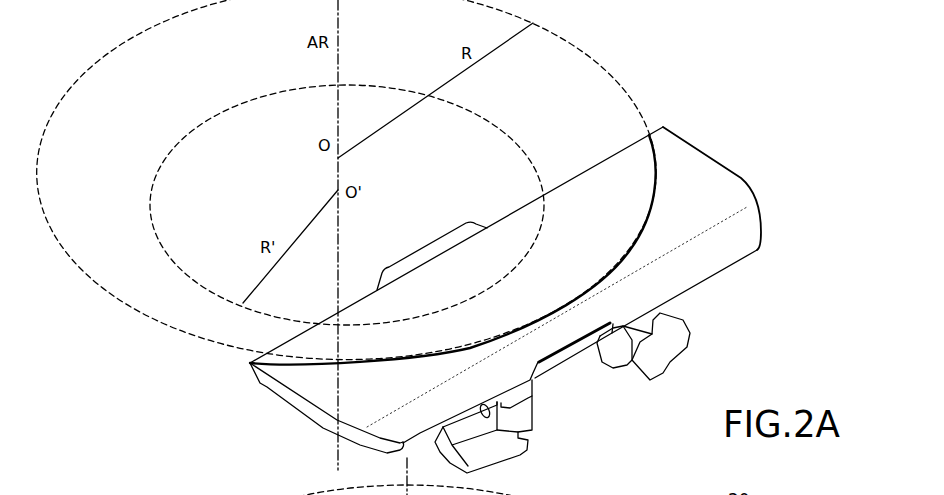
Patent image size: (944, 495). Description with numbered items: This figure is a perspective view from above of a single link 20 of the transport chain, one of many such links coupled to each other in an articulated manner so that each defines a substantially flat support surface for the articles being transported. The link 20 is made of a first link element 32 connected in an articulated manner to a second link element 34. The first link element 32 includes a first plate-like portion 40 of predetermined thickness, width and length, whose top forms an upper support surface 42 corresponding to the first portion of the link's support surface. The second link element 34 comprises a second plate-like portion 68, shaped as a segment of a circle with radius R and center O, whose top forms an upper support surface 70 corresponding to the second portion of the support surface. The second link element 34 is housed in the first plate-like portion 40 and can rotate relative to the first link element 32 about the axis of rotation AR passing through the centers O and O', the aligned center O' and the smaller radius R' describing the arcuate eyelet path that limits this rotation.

The link 20 is at (683, 80).
The first link element 32 is at (737, 147).
The second link element 34 is at (597, 137).
The first plate-like portion 40 is at (782, 255).
The upper support surface 42 is at (720, 192).
The second plate-like portion 68 is at (513, 202).
The upper support surface 70 is at (302, 342).